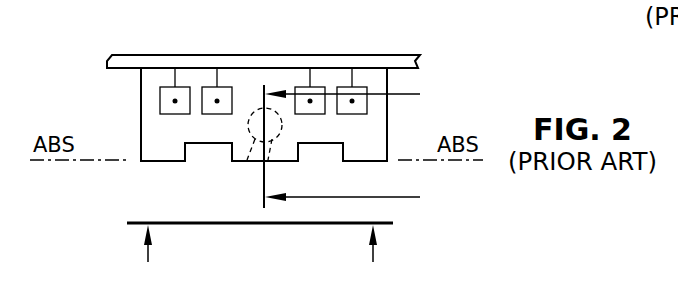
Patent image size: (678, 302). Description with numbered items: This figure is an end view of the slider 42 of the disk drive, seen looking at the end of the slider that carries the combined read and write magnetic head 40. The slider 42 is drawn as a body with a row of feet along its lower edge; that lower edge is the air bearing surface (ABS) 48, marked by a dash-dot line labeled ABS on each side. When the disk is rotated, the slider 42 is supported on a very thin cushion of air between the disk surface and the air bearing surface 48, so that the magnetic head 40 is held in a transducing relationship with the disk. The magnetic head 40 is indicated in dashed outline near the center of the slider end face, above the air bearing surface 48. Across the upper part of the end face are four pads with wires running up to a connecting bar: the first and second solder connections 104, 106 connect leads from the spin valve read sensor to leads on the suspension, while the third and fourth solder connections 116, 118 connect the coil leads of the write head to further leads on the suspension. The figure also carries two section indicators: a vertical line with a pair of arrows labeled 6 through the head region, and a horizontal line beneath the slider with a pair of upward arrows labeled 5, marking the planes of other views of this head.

The slider 42 is at (140, 102).
The air bearing surface (ABS) 48 is at (58, 161).
The first solder connection 104 is at (158, 92).
The third solder connection 116 is at (202, 92).
The fourth solder connection 118 is at (295, 90).
The second solder connection 106 is at (337, 90).
The combined read and write magnetic head 40 is at (247, 161).
The section line 6- 6 is at (352, 147).
The section line 5- 5 is at (260, 258).